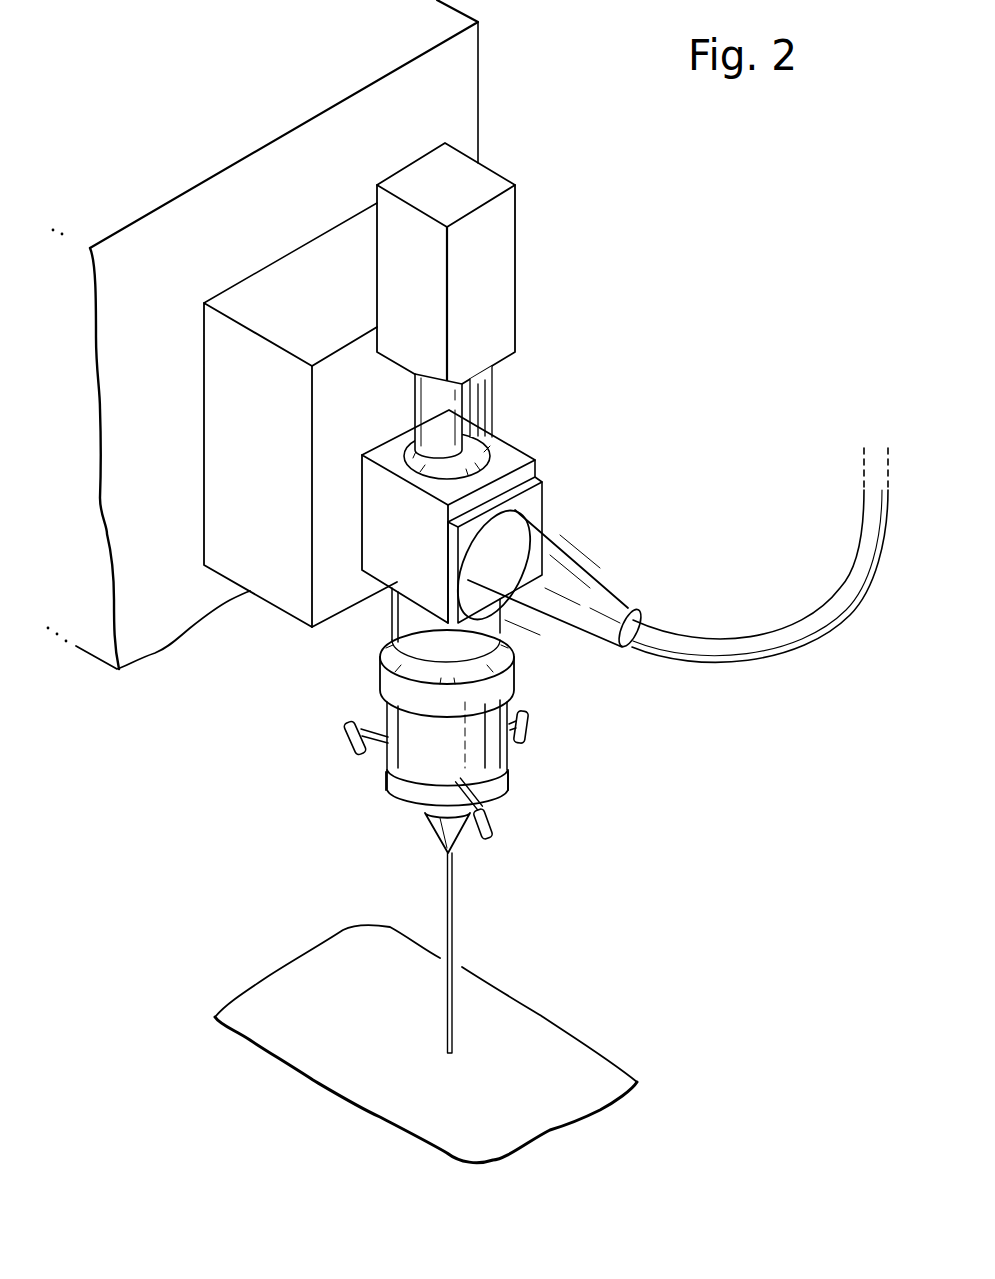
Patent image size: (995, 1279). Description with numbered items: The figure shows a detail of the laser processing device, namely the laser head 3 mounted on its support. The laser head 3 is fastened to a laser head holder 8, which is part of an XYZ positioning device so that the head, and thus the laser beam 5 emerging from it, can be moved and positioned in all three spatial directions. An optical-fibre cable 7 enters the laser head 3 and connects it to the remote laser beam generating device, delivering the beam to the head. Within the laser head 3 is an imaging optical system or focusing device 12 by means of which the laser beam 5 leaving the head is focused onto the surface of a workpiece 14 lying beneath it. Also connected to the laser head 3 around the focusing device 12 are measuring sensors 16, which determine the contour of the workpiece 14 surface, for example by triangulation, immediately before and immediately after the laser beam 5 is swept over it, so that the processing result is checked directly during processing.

The laser head 3 is at (313, 677).
The laser beam 5 is at (454, 928).
The optical-fibre cable 7 is at (838, 589).
The laser head holder 8 is at (460, 80).
The focusing device 12 is at (493, 758).
The workpiece 14 is at (570, 1058).
The measuring sensors 16 is at (352, 748).